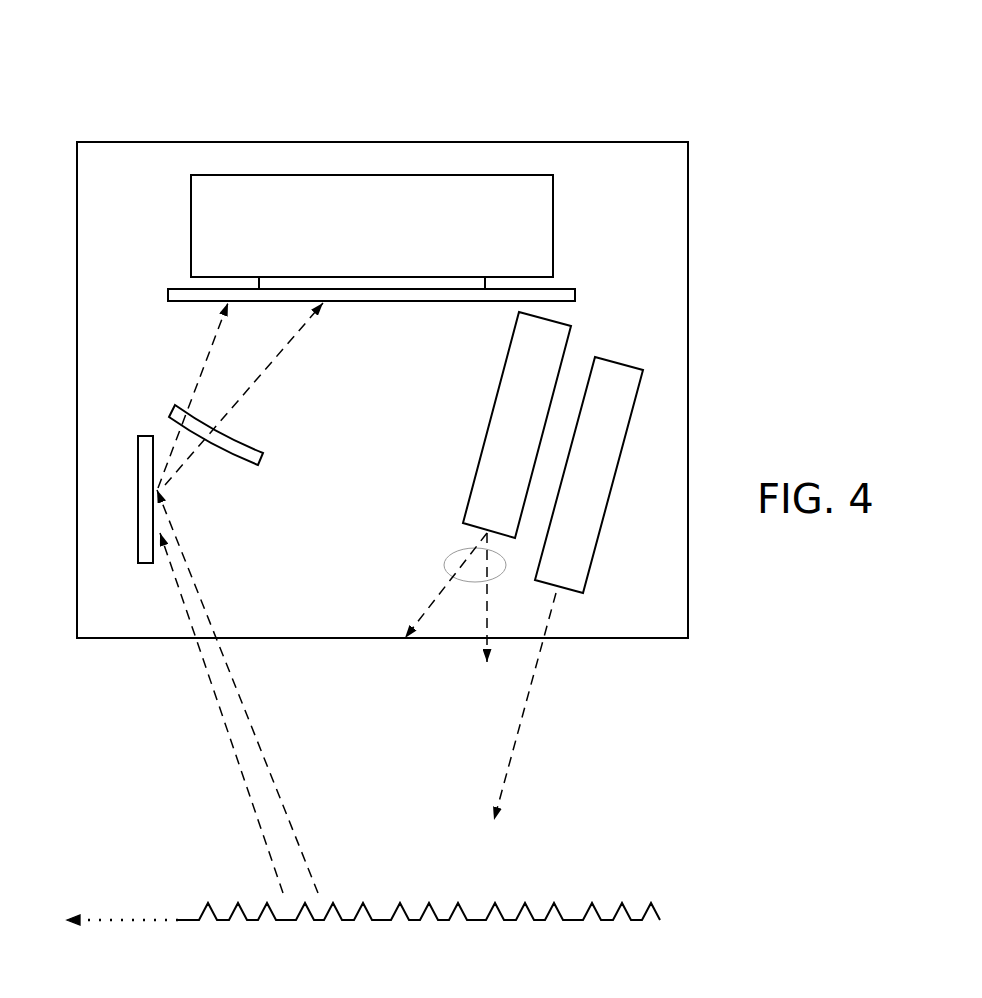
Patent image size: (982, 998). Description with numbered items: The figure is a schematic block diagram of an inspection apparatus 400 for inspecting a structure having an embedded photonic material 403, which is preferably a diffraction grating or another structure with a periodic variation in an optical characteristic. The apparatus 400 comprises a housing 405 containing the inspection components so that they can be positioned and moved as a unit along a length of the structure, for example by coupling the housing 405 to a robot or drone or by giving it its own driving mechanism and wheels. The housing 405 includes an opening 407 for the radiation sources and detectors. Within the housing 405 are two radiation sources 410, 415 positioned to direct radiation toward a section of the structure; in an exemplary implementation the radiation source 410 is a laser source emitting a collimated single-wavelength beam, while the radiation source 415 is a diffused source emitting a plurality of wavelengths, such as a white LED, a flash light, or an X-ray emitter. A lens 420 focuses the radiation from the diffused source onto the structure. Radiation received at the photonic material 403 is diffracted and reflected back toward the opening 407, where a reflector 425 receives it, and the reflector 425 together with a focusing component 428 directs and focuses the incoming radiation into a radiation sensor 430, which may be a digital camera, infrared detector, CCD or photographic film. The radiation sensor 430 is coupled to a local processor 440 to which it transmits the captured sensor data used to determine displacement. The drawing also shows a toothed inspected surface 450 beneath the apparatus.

The inspection apparatus 400 is at (487, 107).
The photonic material 403 is at (237, 903).
The housing 405 is at (688, 302).
The opening 407 is at (315, 633).
The radiation source 410 is at (590, 570).
The diffused radiation source 415 is at (478, 467).
The lens 420 is at (458, 553).
The reflector 425 is at (138, 470).
The focusing component 428 is at (234, 457).
The radiation sensor 430 is at (562, 289).
The local processor 440 is at (553, 227).
The target surface 450 is at (587, 863).